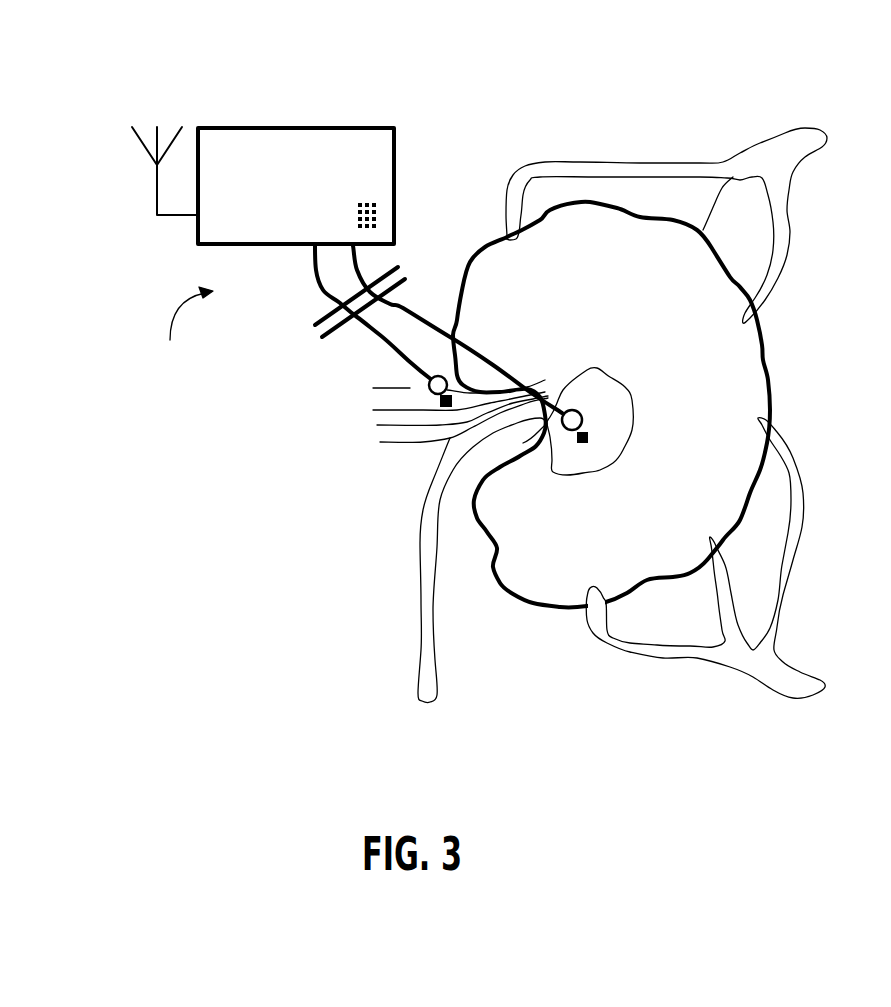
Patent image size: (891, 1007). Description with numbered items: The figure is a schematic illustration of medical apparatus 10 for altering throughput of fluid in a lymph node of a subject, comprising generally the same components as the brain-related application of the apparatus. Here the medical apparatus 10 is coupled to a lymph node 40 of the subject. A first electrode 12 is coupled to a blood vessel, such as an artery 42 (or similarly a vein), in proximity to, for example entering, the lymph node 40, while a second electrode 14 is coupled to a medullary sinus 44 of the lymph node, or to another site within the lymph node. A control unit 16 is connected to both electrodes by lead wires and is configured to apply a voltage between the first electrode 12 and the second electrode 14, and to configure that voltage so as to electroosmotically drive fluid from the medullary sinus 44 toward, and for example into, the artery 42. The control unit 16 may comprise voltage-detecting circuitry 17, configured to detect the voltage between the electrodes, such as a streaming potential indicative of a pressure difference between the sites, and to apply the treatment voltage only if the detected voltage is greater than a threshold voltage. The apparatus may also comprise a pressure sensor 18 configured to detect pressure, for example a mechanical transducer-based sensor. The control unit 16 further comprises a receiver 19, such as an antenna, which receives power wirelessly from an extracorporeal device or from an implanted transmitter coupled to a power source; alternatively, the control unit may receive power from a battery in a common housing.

The medical apparatus 10 is at (188, 336).
The first electrode 12 is at (318, 273).
The second electrode 14 is at (405, 310).
The control unit 16 is at (362, 126).
The voltage-detecting circuitry 17 is at (377, 207).
The pressure sensor 18 is at (545, 388).
The receiver 19 is at (157, 193).
The lymph node 40 is at (768, 380).
The artery 42 is at (425, 403).
The medullary sinus 44 is at (607, 438).